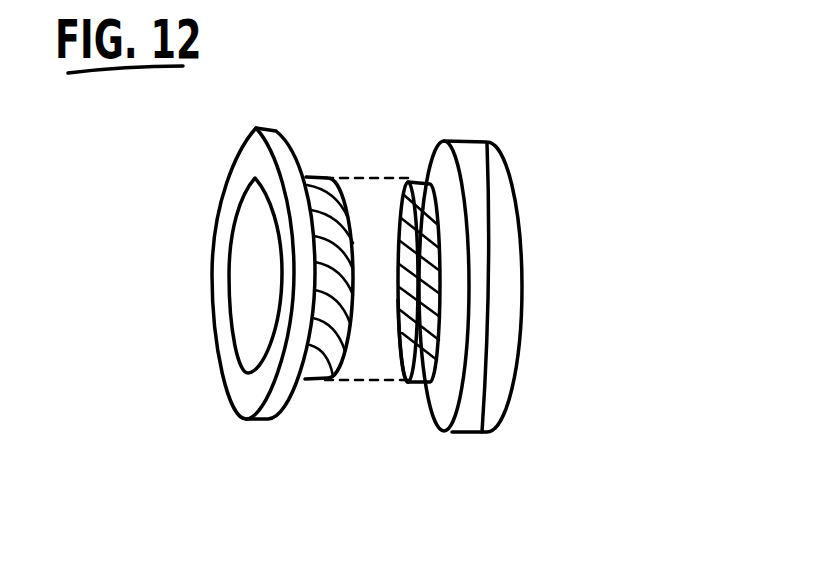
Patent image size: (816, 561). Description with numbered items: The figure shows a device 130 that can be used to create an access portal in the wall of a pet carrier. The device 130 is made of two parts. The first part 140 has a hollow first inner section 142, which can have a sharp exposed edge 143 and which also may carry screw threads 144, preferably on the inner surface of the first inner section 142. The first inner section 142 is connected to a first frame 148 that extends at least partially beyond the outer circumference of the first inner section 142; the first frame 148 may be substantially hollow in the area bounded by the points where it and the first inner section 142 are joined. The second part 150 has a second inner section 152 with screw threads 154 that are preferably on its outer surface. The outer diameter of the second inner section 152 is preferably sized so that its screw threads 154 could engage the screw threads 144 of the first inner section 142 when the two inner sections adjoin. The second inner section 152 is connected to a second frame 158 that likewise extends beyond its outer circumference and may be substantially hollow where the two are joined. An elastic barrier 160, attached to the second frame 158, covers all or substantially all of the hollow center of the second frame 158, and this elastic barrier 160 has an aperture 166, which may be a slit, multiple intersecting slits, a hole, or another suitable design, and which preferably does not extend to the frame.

The device 130 is at (496, 278).
The first part 140 is at (527, 278).
The first inner section 142 is at (415, 277).
The sharp exposed edge 143 is at (415, 390).
The screw threads 144 is at (420, 222).
The first frame 148 is at (484, 436).
The second part 150 is at (210, 321).
The second inner section 152 is at (310, 277).
The screw threads 154 is at (318, 365).
The second frame 158 is at (266, 410).
The elastic barrier 160 is at (245, 335).
The aperture 166 is at (262, 284).